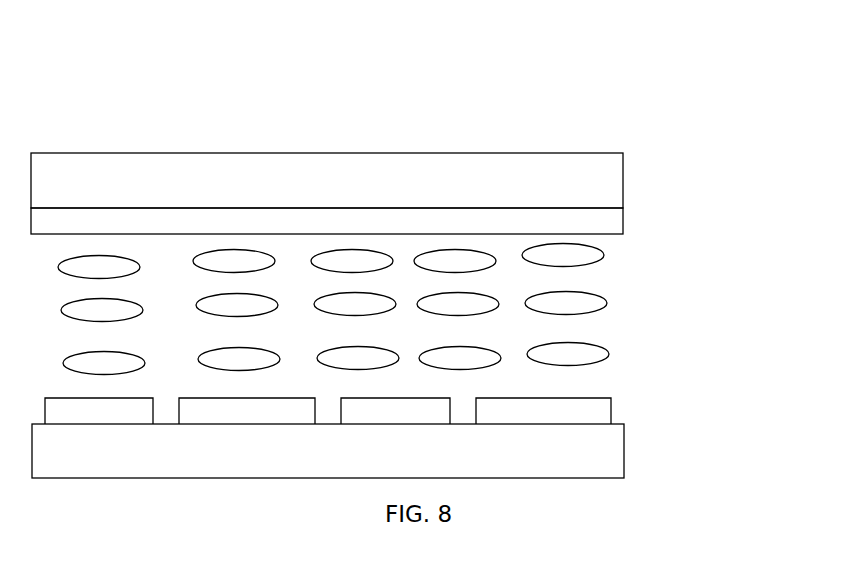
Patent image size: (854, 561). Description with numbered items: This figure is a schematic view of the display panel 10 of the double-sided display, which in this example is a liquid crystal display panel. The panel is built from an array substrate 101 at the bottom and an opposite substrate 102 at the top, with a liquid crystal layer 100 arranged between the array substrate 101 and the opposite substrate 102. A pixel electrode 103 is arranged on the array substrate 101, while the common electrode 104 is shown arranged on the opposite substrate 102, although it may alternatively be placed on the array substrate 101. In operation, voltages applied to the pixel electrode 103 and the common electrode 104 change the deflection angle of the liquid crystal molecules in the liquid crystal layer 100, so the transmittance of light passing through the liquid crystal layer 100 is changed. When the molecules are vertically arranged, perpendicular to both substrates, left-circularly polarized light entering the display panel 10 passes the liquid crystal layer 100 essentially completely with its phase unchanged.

The display panel 10 is at (625, 71).
The liquid crystal layer 100 is at (578, 314).
The array substrate 101 is at (592, 453).
The opposite substrate 102 is at (597, 172).
The pixel electrode 103 is at (592, 408).
The common electrode 104 is at (593, 221).